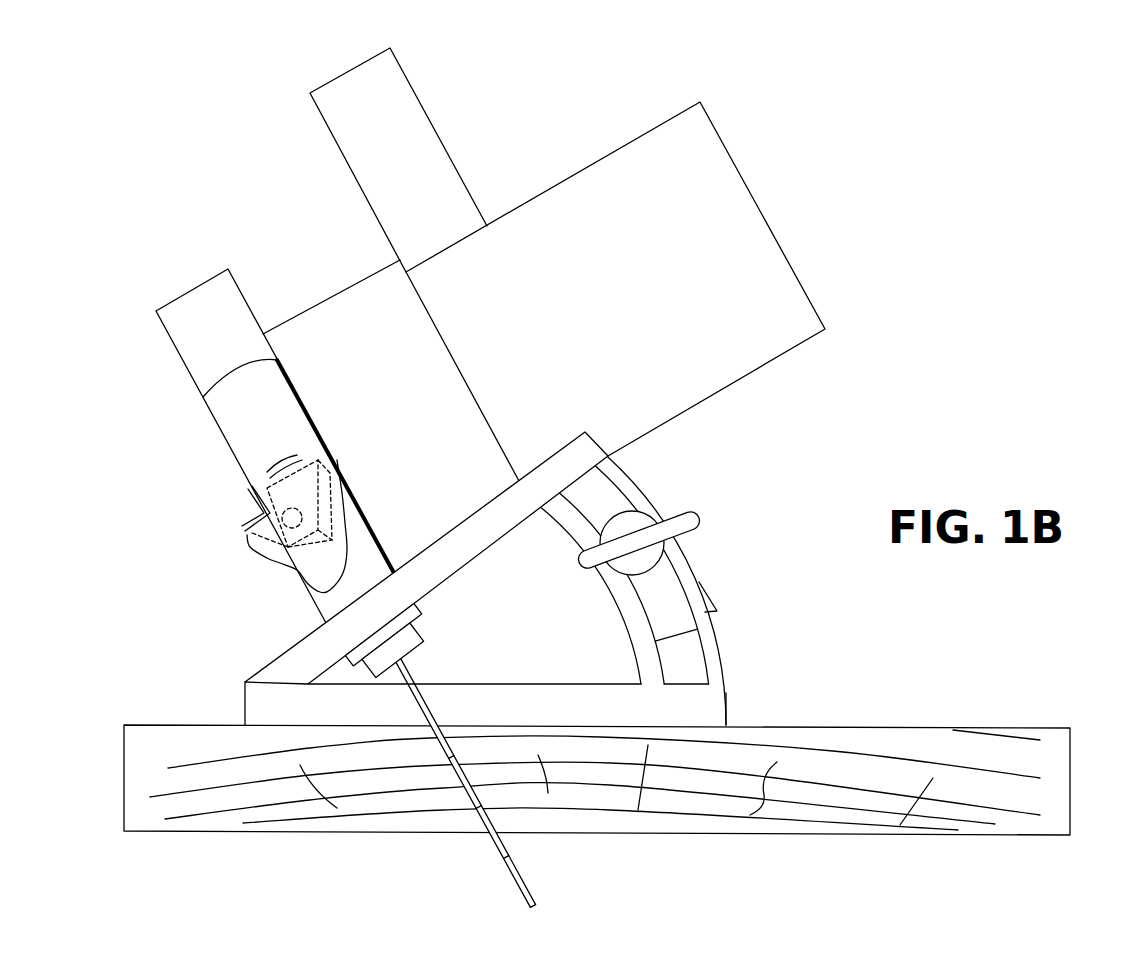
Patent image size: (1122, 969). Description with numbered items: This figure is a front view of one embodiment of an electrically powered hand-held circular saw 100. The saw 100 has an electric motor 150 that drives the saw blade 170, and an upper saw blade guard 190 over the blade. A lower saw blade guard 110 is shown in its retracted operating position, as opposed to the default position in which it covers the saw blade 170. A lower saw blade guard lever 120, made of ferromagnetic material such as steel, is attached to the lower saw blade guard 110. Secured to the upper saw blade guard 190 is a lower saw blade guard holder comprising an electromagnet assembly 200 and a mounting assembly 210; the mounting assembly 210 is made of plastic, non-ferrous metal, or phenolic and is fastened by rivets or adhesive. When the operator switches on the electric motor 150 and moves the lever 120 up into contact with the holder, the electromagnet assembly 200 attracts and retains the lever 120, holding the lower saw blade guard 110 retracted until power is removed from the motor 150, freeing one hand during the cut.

The saw 100 is at (777, 97).
The lower saw blade guard 110 is at (425, 635).
The lower saw blade guard lever 120 is at (248, 520).
The electric motor 150 is at (764, 218).
The saw blade 170 is at (510, 877).
The upper saw blade guard 190 is at (177, 297).
The electromagnet assembly 200 is at (247, 533).
The mounting assembly 210 is at (288, 421).